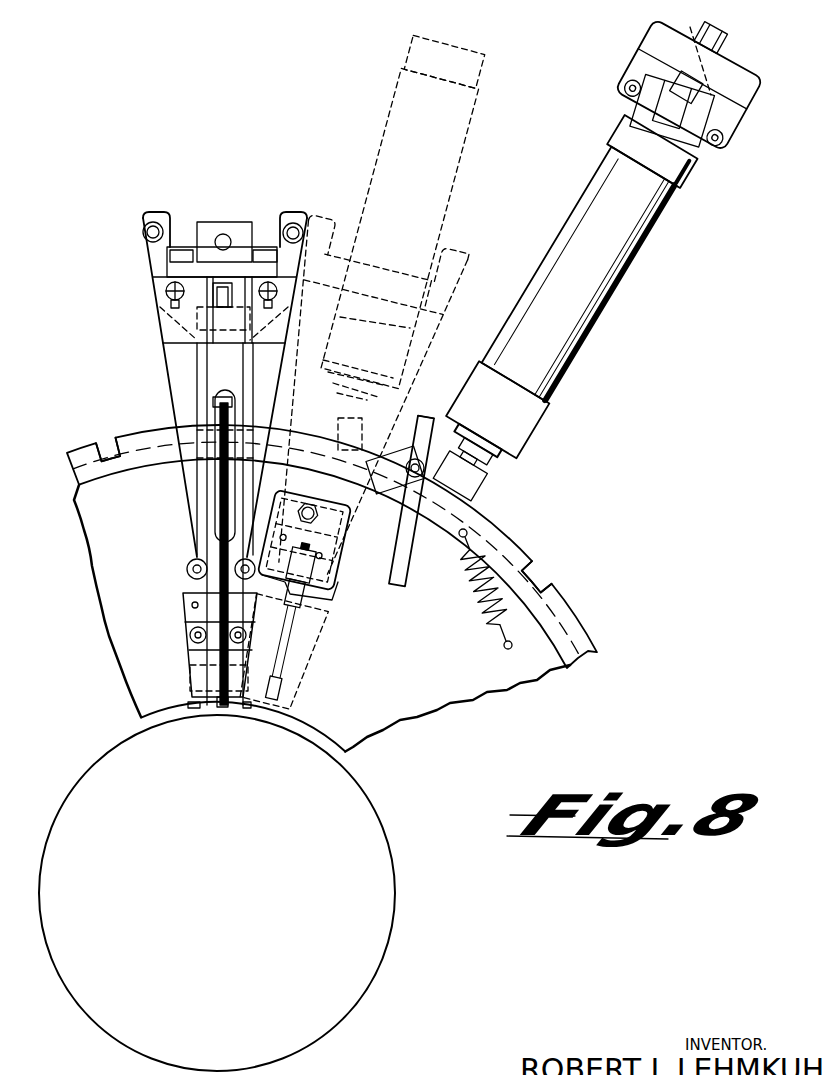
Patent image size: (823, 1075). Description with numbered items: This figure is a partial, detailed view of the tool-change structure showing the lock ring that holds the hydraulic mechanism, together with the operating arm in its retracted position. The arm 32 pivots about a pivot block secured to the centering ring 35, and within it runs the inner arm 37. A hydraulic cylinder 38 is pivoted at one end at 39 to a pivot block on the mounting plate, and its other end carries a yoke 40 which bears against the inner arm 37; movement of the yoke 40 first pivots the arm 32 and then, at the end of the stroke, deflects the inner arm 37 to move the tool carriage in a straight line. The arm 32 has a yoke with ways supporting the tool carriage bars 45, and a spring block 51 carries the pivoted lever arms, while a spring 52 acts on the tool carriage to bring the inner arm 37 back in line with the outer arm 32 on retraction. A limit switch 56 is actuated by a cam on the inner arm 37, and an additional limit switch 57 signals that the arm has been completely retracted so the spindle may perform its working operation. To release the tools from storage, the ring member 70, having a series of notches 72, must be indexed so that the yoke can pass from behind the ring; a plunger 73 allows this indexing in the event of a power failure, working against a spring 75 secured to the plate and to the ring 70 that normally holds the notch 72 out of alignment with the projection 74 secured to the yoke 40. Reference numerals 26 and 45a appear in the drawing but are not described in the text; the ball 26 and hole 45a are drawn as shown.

The ball 26 is at (388, 947).
The arm 32 is at (173, 380).
The centering ring 35 is at (189, 605).
The inner arm 37 is at (210, 496).
The hydraulic cylinder 38 is at (446, 221).
The pivot 39 is at (710, 123).
The yoke 40 is at (410, 562).
The tool carriage bars 45 is at (143, 232).
The hole 45a is at (293, 224).
The spring block 51 is at (224, 234).
The spring 52 is at (166, 300).
The limit switch 56 is at (316, 566).
The additional limit switch 57 is at (345, 516).
The ring member 70 is at (565, 603).
The notches 72 is at (100, 443).
The plunger 73 is at (425, 415).
The projection 74 is at (475, 514).
The spring 75 is at (483, 578).